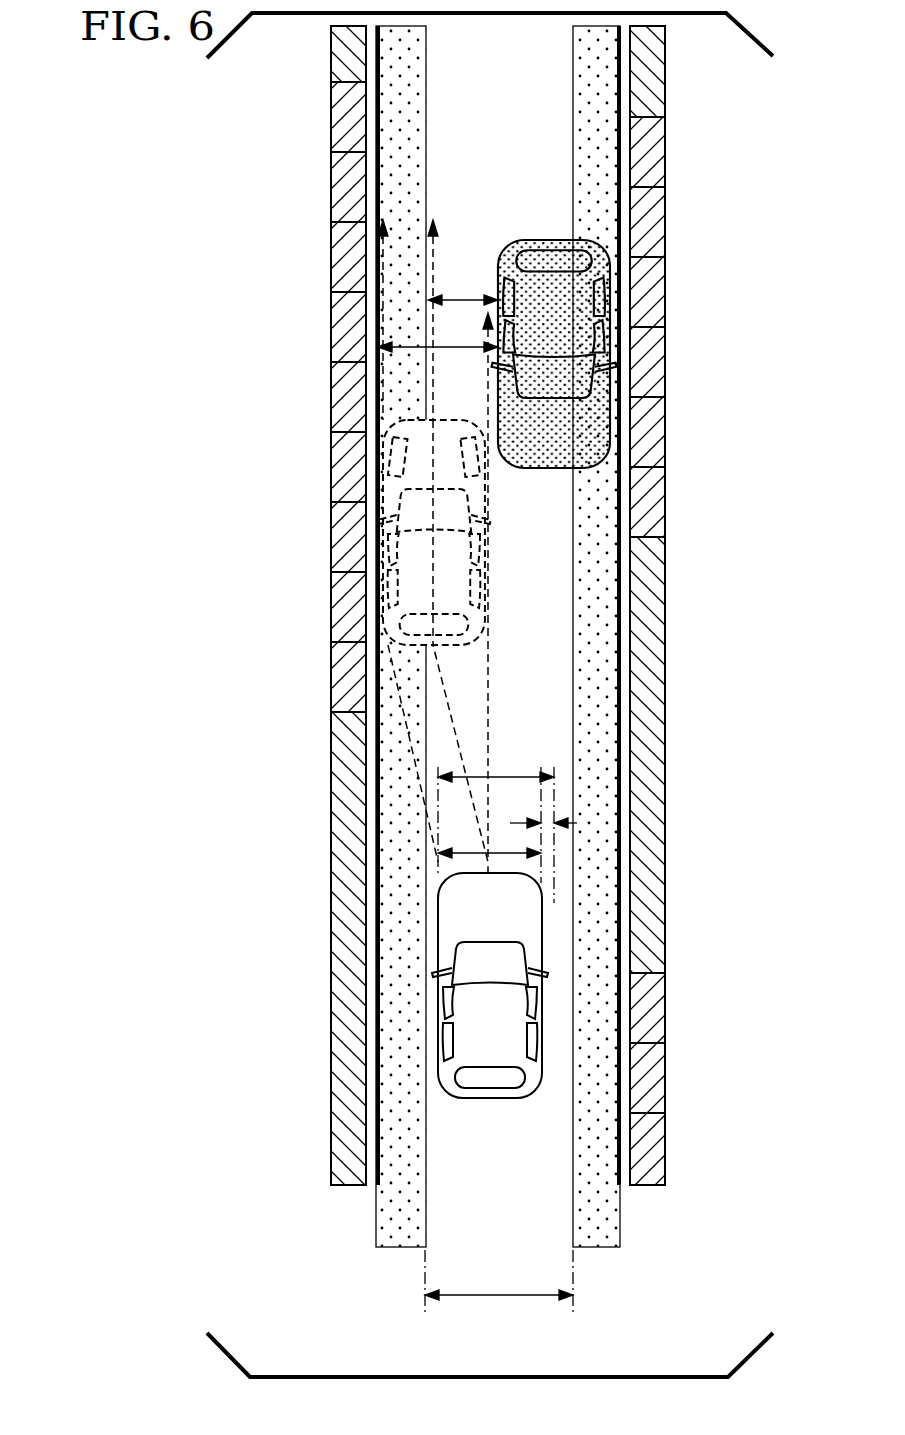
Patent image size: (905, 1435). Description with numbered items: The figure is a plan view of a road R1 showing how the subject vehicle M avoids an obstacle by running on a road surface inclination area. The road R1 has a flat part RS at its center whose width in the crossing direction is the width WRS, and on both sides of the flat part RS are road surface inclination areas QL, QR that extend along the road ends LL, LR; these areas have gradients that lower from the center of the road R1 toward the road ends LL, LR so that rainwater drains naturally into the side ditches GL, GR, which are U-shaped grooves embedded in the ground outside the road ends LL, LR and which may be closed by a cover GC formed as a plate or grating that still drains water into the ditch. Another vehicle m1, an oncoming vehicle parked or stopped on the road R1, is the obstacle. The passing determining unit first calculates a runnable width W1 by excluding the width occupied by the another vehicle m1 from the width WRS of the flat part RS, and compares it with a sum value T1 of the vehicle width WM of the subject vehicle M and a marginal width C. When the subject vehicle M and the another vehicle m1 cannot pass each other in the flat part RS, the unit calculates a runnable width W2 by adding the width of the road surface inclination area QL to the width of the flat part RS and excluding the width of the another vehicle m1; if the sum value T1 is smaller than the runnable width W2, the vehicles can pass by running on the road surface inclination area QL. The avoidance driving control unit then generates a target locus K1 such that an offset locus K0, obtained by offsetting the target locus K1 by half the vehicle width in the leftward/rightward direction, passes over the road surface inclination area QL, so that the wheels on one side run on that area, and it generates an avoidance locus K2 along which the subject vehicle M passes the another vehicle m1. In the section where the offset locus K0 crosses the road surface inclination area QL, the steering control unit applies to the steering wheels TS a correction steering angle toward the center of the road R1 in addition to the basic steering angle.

The road R1 is at (445, 1367).
The side ditch GL is at (331, 830).
The side ditch GR is at (665, 790).
The cover GC is at (331, 272).
The road surface inclination area QL is at (428, 66).
The road surface inclination area QR is at (573, 100).
The road end LL is at (380, 178).
The road end LR is at (619, 148).
The offset locus K0 is at (395, 695).
The target locus K1 is at (488, 653).
The avoidance locus K2 is at (437, 584).
The steering wheels TS is at (385, 450).
The another vehicle m1 is at (535, 458).
The subject vehicle M is at (490, 1058).
The runnable width W1 is at (463, 284).
The runnable width W2 is at (438, 333).
The sum value T1 is at (496, 822).
The marginal width C is at (543, 825).
The vehicle width WM is at (489, 837).
The flat part RS is at (493, 1211).
The width of flat part WRS is at (499, 1310).